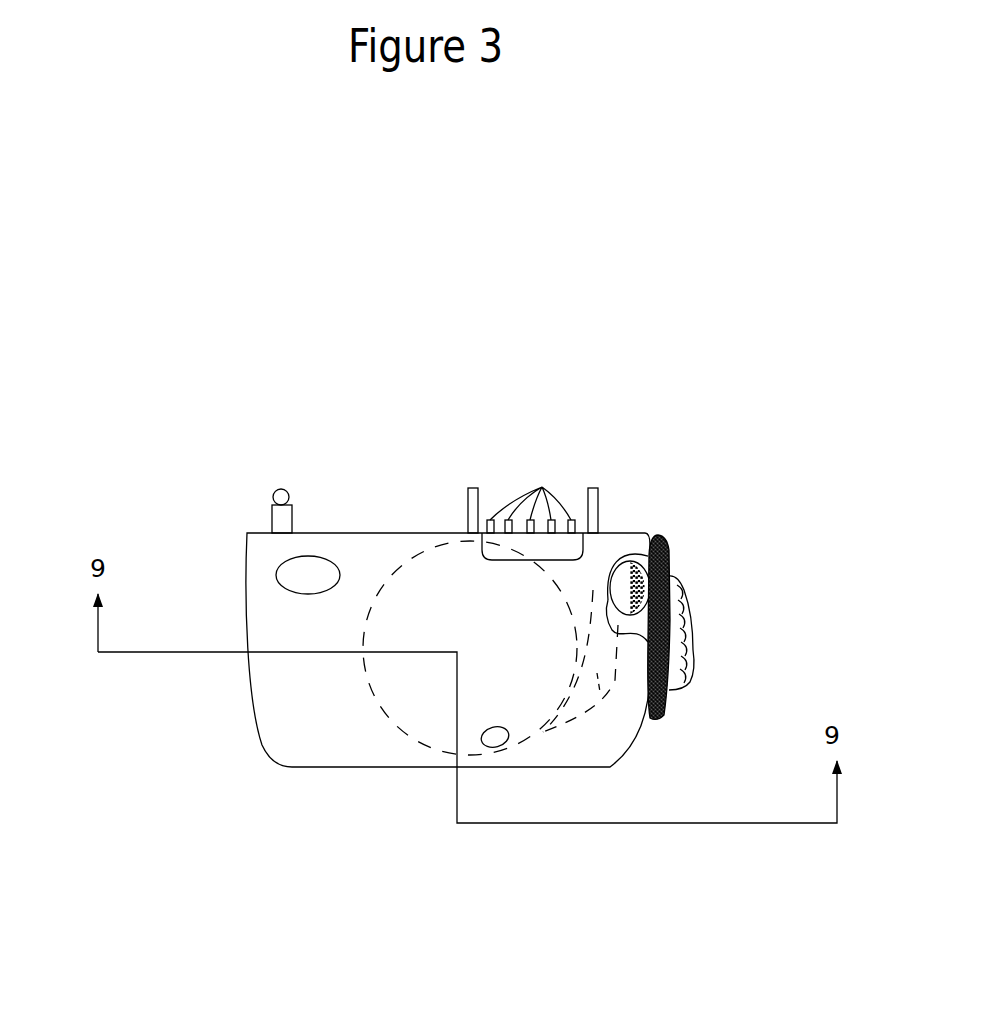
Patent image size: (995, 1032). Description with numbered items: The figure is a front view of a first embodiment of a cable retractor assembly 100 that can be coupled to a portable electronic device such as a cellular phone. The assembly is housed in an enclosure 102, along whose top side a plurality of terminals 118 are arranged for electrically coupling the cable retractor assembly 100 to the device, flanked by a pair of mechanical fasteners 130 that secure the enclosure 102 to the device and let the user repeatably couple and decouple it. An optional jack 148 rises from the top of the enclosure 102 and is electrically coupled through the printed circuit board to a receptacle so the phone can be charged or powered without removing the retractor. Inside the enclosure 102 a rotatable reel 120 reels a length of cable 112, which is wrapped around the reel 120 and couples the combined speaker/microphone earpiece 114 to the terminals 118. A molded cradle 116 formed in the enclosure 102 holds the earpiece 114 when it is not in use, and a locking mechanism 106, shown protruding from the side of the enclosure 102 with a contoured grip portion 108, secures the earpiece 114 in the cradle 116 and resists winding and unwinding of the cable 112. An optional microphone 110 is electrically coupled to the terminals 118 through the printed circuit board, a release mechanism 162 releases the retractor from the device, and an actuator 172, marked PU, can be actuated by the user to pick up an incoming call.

The cable retractor assembly 100 is at (648, 452).
The enclosure 102 is at (257, 728).
The locking mechanism 106 is at (669, 533).
The contoured grip portion 108 is at (691, 618).
The microphone 110 is at (488, 746).
The cable 112 is at (578, 721).
The combined speaker/microphone earpiece 114 is at (602, 658).
The molded cradle 116 is at (633, 641).
The terminals 118 is at (541, 488).
The rotatable reel 120 is at (373, 700).
The mechanical fasteners 130 is at (582, 483).
The jack 148 is at (272, 490).
The release mechanism 162 is at (540, 567).
The actuator 172 is at (277, 572).